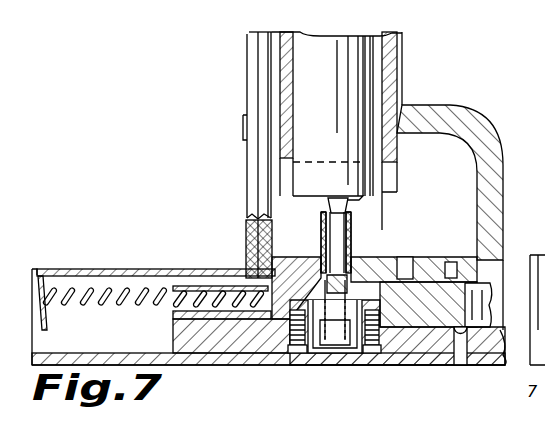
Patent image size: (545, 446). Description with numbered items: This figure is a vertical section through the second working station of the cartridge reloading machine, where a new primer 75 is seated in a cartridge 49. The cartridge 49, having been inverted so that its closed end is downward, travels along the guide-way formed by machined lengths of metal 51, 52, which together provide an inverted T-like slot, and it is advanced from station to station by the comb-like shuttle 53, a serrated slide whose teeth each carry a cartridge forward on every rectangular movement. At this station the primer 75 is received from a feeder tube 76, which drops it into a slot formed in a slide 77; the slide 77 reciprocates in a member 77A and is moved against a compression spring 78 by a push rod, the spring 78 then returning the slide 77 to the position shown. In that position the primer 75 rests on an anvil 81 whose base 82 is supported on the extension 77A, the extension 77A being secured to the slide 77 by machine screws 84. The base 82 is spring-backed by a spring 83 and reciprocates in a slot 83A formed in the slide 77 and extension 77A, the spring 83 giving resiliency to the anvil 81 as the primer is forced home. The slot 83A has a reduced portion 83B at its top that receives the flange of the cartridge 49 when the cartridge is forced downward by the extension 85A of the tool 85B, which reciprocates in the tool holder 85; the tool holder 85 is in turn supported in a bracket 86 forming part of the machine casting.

The feeder tube 76 is at (250, 190).
The tool holder 85 is at (398, 66).
The tool 85B is at (312, 70).
The extension of the tool 85A is at (338, 240).
The bracket 86 is at (465, 108).
The cartridge 49 is at (320, 236).
The length of metal 51 is at (246, 253).
The slide 77 is at (405, 300).
The extension of the slide 77A is at (197, 339).
The compression spring 78 is at (67, 290).
The anvil 81 is at (312, 283).
The shuttle 53 is at (400, 268).
The length of metal 52 is at (451, 270).
The primer 75 is at (350, 274).
The spring 83 is at (400, 355).
The slot 83A is at (380, 318).
The reduced portion 83B is at (370, 300).
The base of the anvil 82 is at (335, 353).
The machine screws 84 is at (258, 353).